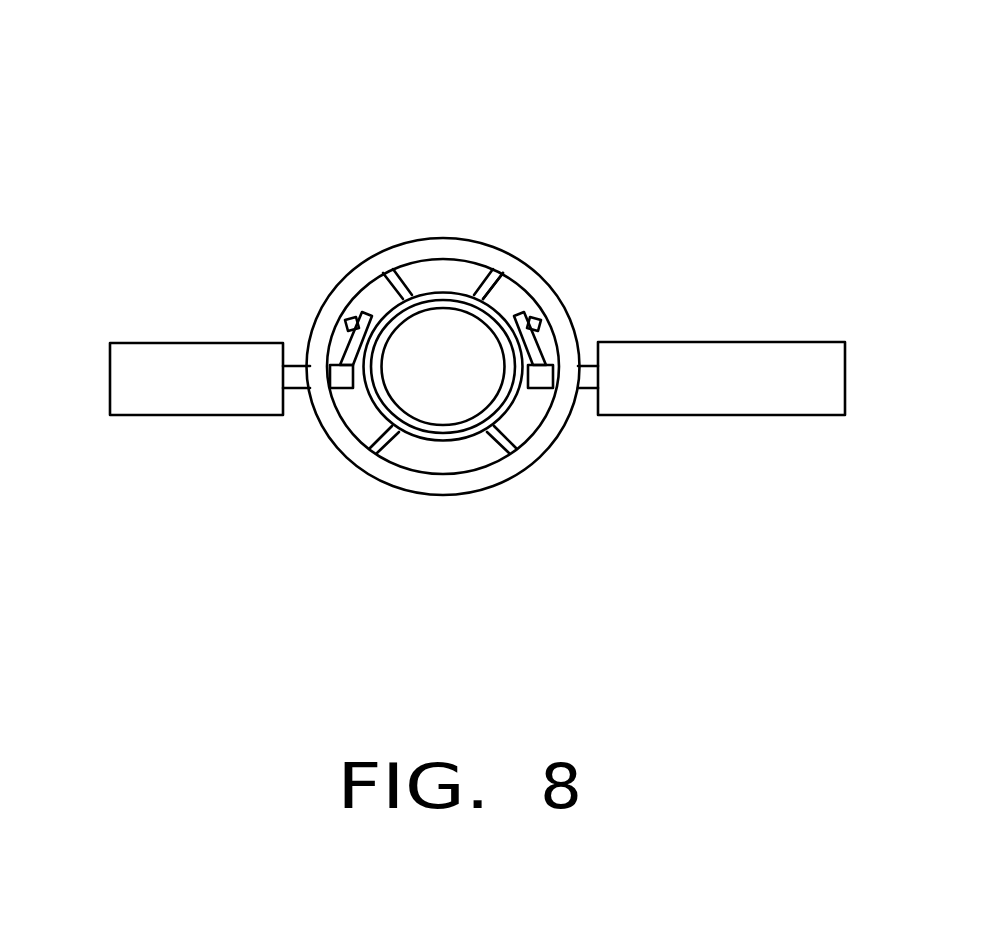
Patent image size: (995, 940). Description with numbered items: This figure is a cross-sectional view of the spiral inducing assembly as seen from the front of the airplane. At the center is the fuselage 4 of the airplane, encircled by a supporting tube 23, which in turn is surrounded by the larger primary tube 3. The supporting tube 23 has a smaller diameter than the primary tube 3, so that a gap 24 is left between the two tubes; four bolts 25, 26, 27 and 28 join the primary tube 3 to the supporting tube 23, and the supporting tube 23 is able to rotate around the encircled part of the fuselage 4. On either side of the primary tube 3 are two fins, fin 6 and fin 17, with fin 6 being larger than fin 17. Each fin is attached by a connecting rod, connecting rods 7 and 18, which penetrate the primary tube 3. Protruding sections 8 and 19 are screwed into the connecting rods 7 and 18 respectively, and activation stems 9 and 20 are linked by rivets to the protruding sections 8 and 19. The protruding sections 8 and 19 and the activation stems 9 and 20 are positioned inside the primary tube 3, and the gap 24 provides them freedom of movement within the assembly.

The primary tube 3 is at (415, 487).
The fuselage 4 is at (440, 347).
The fin 6 is at (692, 393).
The connecting rod 7 is at (585, 377).
The protruding section 8 is at (532, 342).
The activation stem 9 is at (530, 320).
The fin 17 is at (127, 392).
The connecting rod 18 is at (287, 393).
The protruding section 19 is at (348, 352).
The activation stem 20 is at (353, 317).
The supporting tube 23 is at (441, 436).
The gap 24 is at (508, 295).
The bolt 25 is at (397, 283).
The bolt 26 is at (481, 288).
The bolt 27 is at (505, 443).
The bolt 28 is at (392, 440).